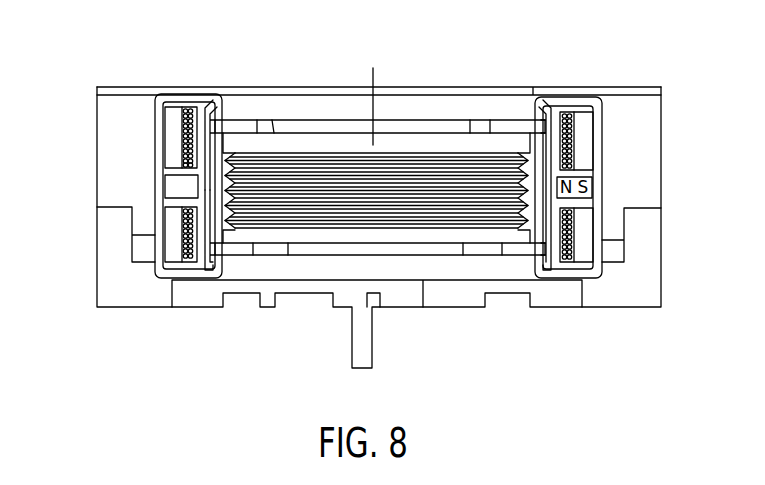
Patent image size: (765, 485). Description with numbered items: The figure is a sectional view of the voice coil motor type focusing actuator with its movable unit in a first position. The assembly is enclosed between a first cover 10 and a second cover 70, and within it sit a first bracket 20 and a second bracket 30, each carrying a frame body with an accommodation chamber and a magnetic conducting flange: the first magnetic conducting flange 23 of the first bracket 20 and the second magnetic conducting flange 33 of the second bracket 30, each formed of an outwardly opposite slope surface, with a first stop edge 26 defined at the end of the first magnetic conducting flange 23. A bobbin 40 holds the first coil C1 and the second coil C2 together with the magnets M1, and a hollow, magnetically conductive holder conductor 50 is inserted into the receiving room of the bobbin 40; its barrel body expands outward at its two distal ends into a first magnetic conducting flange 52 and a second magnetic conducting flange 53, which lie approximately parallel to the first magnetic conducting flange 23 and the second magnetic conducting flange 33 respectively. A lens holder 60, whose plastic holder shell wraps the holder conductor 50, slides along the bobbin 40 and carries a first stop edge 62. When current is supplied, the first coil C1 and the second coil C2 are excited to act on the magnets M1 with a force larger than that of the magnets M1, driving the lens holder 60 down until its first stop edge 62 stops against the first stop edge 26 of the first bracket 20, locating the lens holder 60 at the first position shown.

The first cover 10 is at (404, 240).
The first bracket 20 is at (612, 225).
The second bracket 30 is at (614, 124).
The bobbin 40 is at (566, 287).
The holder conductor 50 is at (524, 246).
The first magnetic conducting flange 52 is at (212, 253).
The second magnetic conducting flange 53 is at (208, 118).
The first magnetic conducting flange 23 is at (220, 258).
The second magnetic conducting flange 33 is at (228, 112).
The first stop edge 26 is at (376, 273).
The first stop edge 62 is at (225, 247).
The lens holder 60 is at (516, 139).
The second cover 70 is at (553, 80).
The first coil C1 is at (168, 246).
The second coil C2 is at (163, 125).
The magnet M1 is at (163, 187).